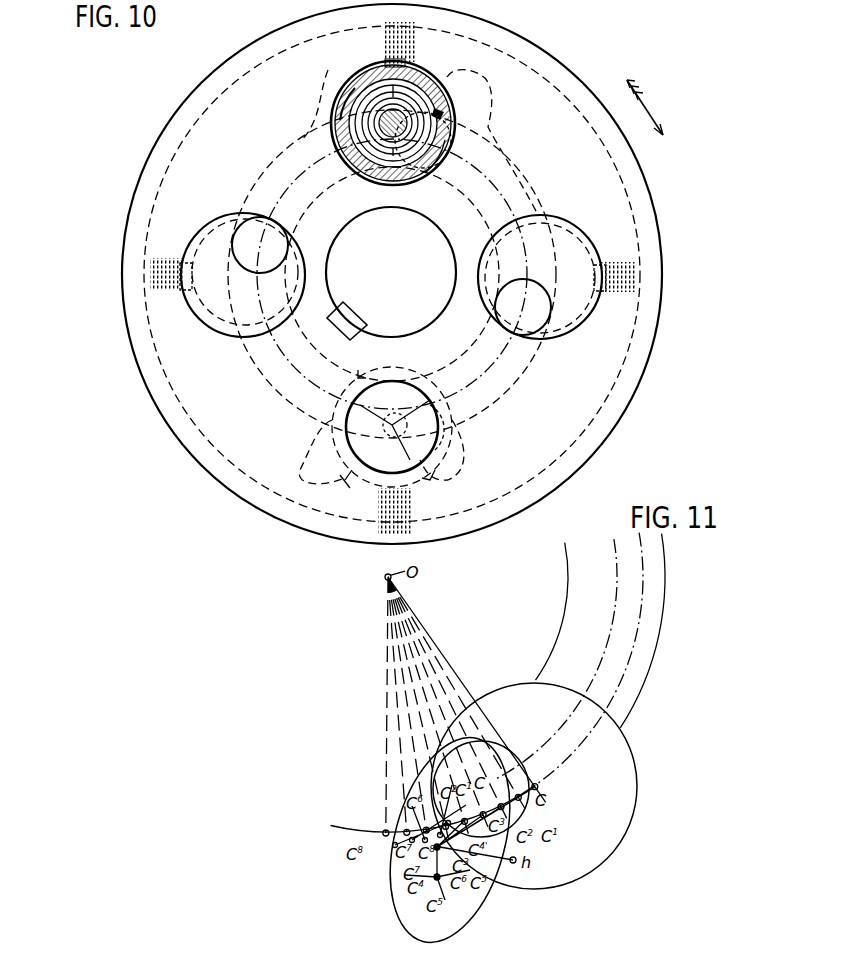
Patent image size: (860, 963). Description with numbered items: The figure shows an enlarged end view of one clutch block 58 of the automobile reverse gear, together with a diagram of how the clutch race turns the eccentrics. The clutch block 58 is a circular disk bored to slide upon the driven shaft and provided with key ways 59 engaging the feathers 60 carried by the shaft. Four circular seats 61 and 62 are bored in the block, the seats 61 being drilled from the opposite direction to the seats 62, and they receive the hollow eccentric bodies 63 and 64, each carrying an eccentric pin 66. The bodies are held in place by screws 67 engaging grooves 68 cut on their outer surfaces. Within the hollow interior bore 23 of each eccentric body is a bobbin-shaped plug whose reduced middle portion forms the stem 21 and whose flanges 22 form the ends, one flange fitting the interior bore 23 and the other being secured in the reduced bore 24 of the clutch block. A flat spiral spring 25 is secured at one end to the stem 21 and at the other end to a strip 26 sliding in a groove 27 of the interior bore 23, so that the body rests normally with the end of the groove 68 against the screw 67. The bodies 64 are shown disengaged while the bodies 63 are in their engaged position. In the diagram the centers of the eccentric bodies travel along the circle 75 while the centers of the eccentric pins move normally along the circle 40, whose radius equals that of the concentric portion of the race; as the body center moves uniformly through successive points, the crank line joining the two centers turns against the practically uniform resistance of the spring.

In FIG. 10, the stem 21 is at (384, 432).
In FIG. 10, the flanges 22 is at (335, 430).
In FIG. 10, the interior bore 23 is at (380, 170).
In FIG. 10, the reduced bore 24 is at (438, 427).
In FIG. 10, the flat spiral spring 25 is at (417, 100).
In FIG. 10, the strip 26 is at (442, 112).
In FIG. 10, the groove 27 is at (432, 125).
In FIG. 11, the circle 40 is at (609, 614).
In FIG. 10, the clutch block 58 is at (392, 274).
In FIG. 10, the key ways 59 is at (360, 330).
In FIG. 10, the feathers 60 is at (356, 316).
In FIG. 10, the circular seats 61 is at (416, 182).
In FIG. 10, the circular seats 62 is at (205, 327).
In FIG. 10, the eccentric bodies 63 is at (449, 142).
In FIG. 10, the eccentric bodies 64 is at (588, 205).
In FIG. 10, the eccentric pins 66 is at (243, 265).
In FIG. 10, the screws 67 is at (405, 35).
In FIG. 10, the grooves 68 is at (408, 64).
In FIG. 11, the circle 75 is at (630, 640).